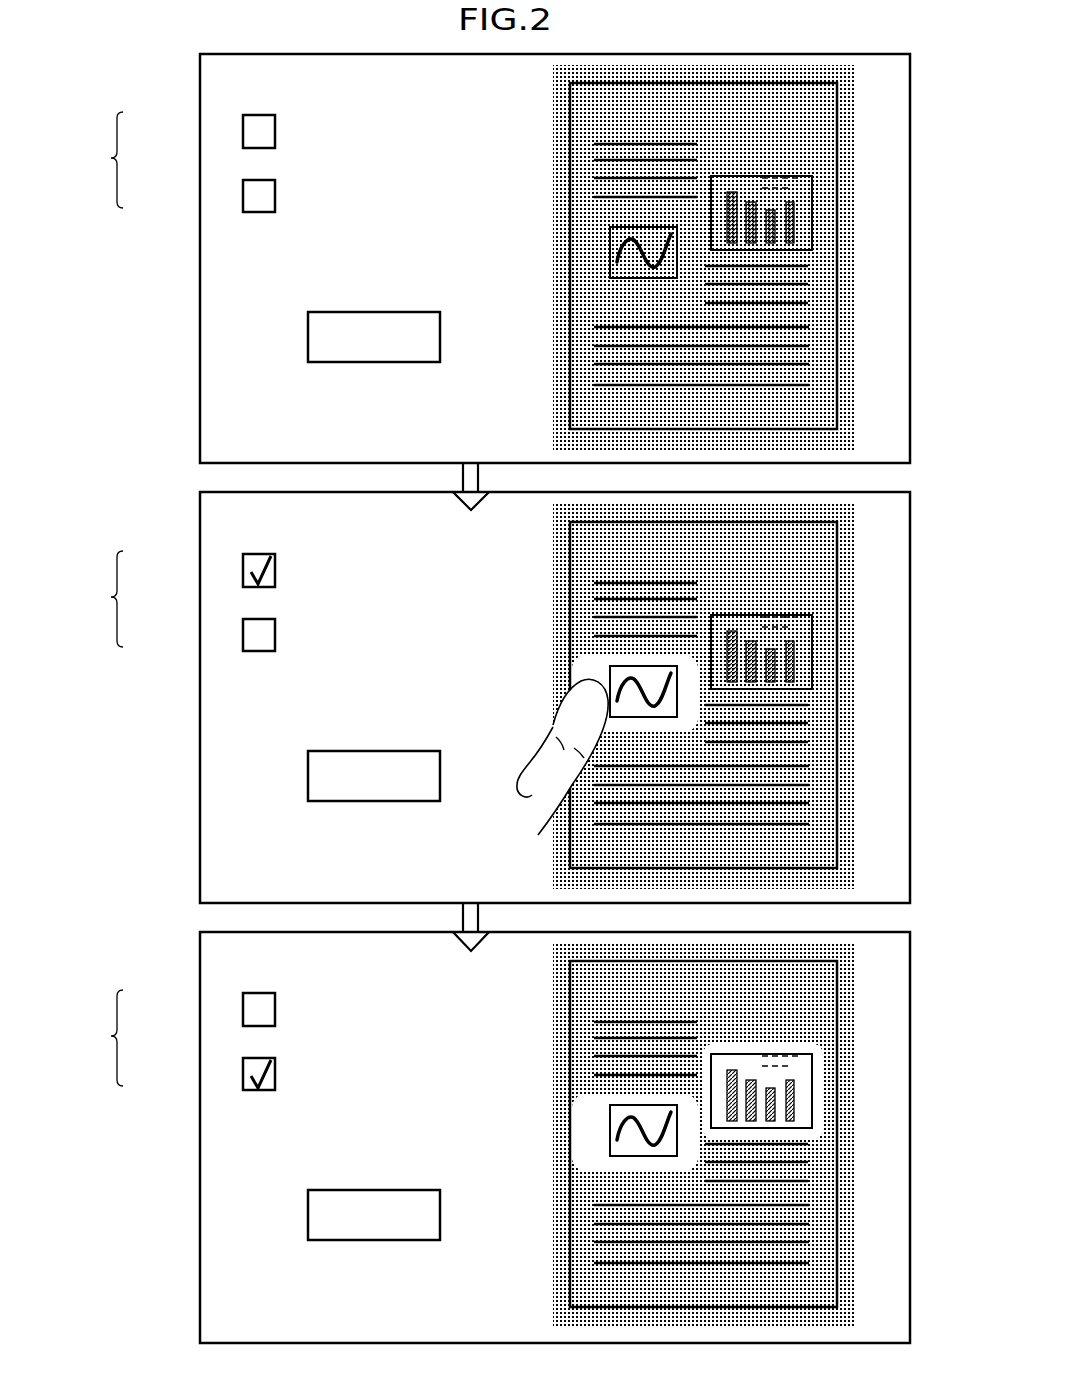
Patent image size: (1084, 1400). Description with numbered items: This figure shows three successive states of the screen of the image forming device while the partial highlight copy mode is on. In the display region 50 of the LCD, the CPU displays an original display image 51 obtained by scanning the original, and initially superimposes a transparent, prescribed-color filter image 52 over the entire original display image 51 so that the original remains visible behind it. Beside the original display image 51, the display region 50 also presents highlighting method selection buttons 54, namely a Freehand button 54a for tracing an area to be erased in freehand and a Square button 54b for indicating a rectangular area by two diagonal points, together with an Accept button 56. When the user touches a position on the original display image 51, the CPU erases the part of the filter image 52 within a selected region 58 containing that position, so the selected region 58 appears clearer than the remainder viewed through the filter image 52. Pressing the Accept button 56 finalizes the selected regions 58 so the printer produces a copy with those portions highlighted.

The display region 50 is at (200, 265).
The original display image 51 is at (570, 199).
The filter image 52 is at (553, 147).
The highlighting method selection buttons 54 is at (102, 599).
The Freehand button 54a is at (243, 132).
The Square button 54b is at (243, 197).
The Accept button 56 is at (308, 335).
The selected region 58 is at (589, 673).